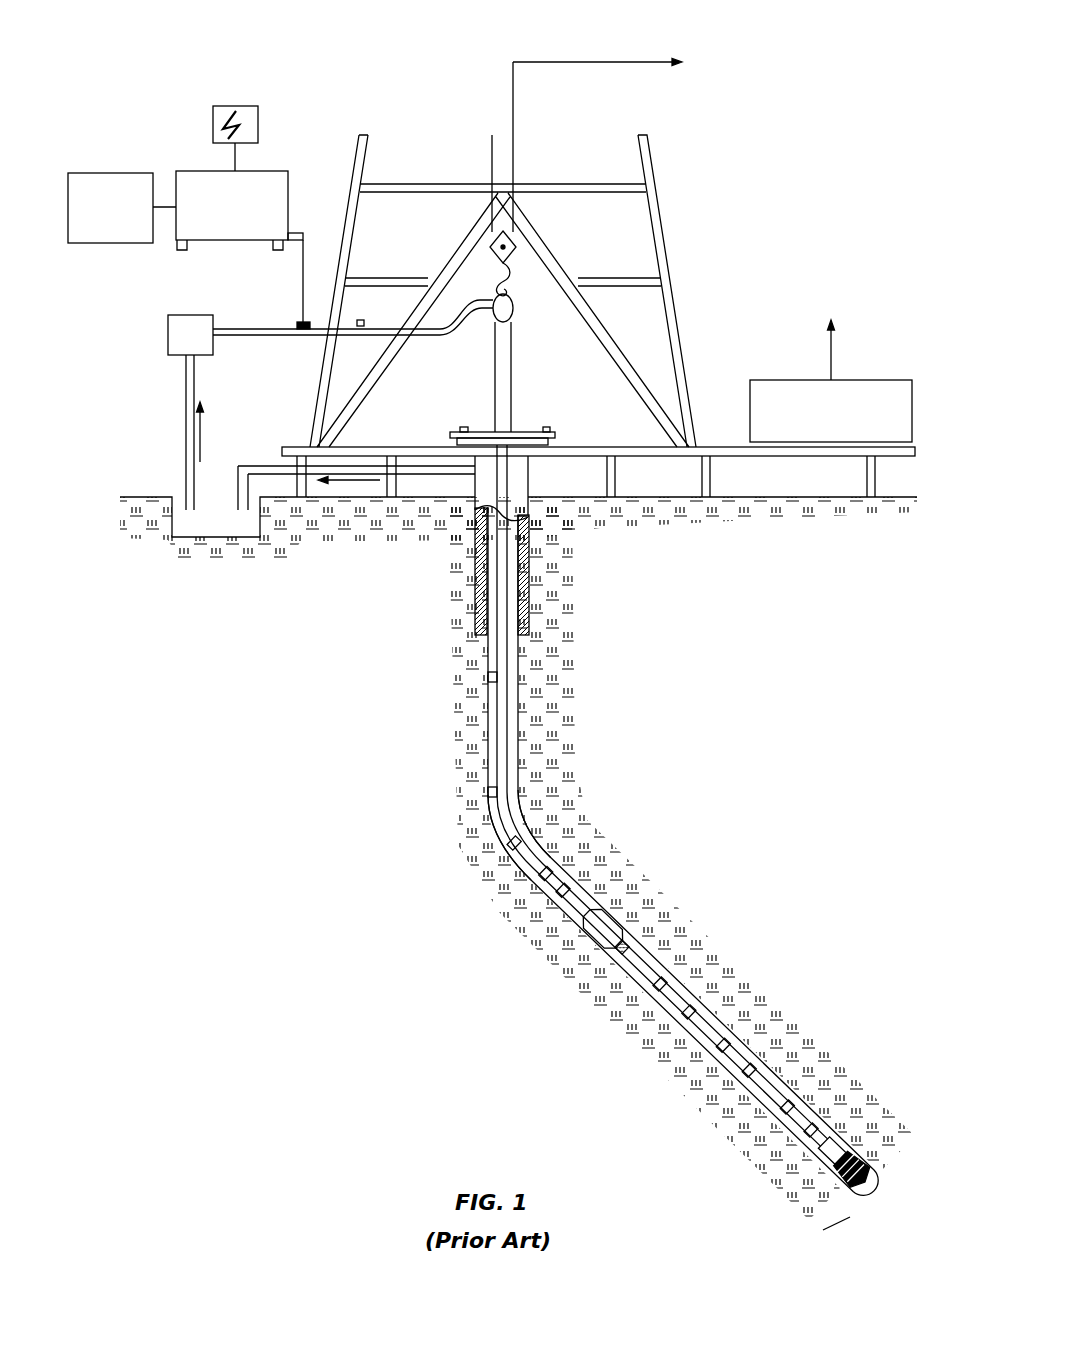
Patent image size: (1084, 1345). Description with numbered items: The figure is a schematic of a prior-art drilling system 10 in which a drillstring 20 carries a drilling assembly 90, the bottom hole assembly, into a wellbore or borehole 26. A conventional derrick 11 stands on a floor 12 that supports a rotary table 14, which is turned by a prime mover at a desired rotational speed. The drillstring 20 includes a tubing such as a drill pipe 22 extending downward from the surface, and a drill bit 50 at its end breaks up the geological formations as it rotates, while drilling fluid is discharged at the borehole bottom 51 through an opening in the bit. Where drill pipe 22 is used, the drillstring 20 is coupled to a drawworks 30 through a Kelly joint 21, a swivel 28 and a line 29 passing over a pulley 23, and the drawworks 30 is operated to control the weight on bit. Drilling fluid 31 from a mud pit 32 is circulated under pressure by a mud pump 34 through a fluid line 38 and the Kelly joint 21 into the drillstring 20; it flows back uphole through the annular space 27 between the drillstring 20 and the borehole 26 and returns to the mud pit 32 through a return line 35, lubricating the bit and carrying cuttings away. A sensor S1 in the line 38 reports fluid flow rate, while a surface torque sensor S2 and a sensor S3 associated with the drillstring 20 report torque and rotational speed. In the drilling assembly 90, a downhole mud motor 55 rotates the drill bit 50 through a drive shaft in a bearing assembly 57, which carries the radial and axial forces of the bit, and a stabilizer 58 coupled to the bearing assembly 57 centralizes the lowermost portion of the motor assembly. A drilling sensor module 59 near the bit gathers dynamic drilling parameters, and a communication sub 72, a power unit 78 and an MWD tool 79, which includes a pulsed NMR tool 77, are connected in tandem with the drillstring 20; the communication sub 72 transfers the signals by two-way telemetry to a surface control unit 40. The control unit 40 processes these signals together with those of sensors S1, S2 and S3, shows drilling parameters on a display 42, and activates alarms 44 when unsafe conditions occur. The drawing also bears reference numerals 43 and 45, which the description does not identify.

The drilling system 10 is at (415, 78).
The derrick 11 is at (520, 291).
The floor 12 is at (598, 438).
The rotary table 14 is at (518, 412).
The drillstring 20 is at (526, 728).
The Kelly joint 21 is at (535, 377).
The drill pipe 22 is at (488, 707).
The pulley 23 is at (530, 270).
The wellbore 26 is at (565, 822).
The annular space 27 is at (585, 858).
The swivel 28 is at (478, 329).
The line 29 is at (640, 141).
The drawworks 30 is at (849, 381).
The drilling fluid 31 is at (518, 531).
The mud pit 32 is at (243, 528).
The mud pump 34 is at (165, 326).
The return line 35 is at (356, 529).
The fluid line 38 is at (305, 405).
The surface control unit 40 is at (215, 184).
The display/monitor 42 is at (256, 98).
The sensor 43 is at (277, 308).
The alarms 44 is at (110, 224).
The signal line 45 is at (316, 232).
The drill bit 50 is at (888, 1163).
The borehole bottom 51 is at (828, 1243).
The downhole motor 55 is at (720, 1010).
The bearing assembly 57 is at (843, 1119).
The stabilizer 58 is at (862, 1133).
The drilling sensor module 59 is at (786, 1180).
The communication sub 72 is at (465, 833).
The pulsed NMR tool 77 is at (581, 942).
The power unit 78 is at (511, 865).
The MWD tool 79 is at (524, 884).
The drilling assembly 90 is at (752, 904).
The sensor S1 is at (380, 307).
The surface torque sensor S2 is at (574, 416).
The sensor S3 is at (439, 416).